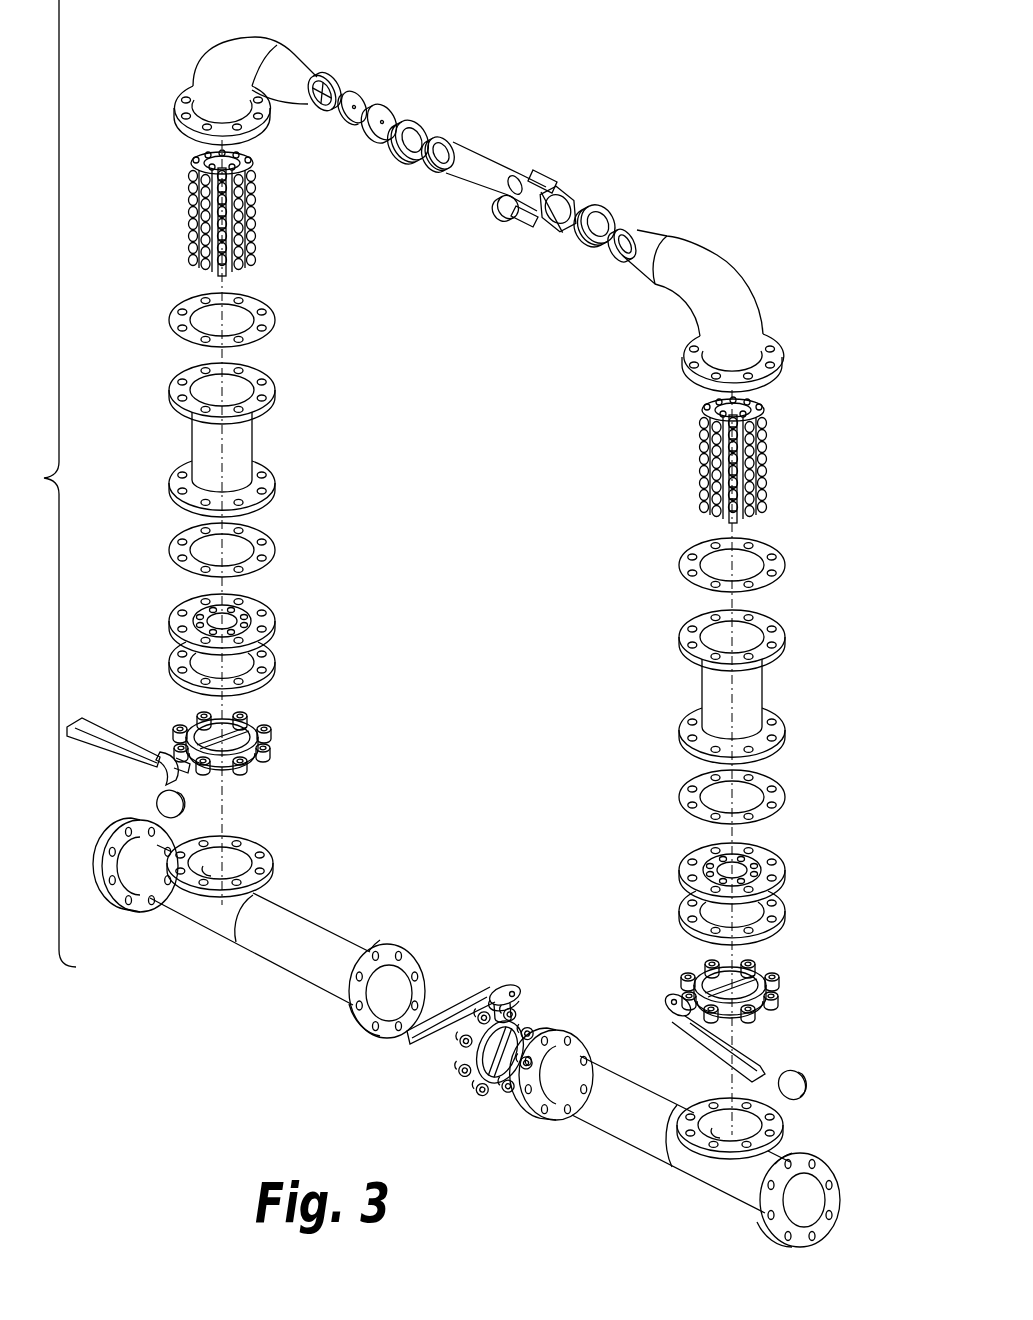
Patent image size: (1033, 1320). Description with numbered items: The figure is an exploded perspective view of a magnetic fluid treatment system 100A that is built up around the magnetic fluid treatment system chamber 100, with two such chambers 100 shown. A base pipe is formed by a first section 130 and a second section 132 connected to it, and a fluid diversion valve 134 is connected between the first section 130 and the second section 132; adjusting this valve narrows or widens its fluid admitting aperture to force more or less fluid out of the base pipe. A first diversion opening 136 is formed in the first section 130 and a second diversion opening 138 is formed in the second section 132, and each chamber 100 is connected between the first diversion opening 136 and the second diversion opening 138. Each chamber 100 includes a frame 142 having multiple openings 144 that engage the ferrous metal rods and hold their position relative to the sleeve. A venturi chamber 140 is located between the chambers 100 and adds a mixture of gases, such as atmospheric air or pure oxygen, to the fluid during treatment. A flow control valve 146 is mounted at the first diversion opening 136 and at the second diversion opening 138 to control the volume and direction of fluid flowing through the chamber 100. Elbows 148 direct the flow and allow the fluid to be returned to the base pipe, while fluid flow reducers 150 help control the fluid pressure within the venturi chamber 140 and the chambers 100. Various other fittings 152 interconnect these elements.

The magnetic fluid treatment system 100A is at (577, 66).
The magnetic fluid treatment system chamber 100 is at (190, 211).
The first section 130 is at (614, 1122).
The second section 132 is at (288, 927).
The fluid diversion valve 134 is at (522, 1008).
The first diversion opening 136 is at (775, 1130).
The second diversion opening 138 is at (222, 840).
The venturi chamber 140 is at (523, 177).
The frame 142 is at (195, 444).
The openings 144 is at (257, 378).
The flow control valve 146 is at (255, 718).
The elbows 148 is at (237, 50).
The fluid flow reducers 150 is at (193, 612).
The fittings 152 is at (417, 160).